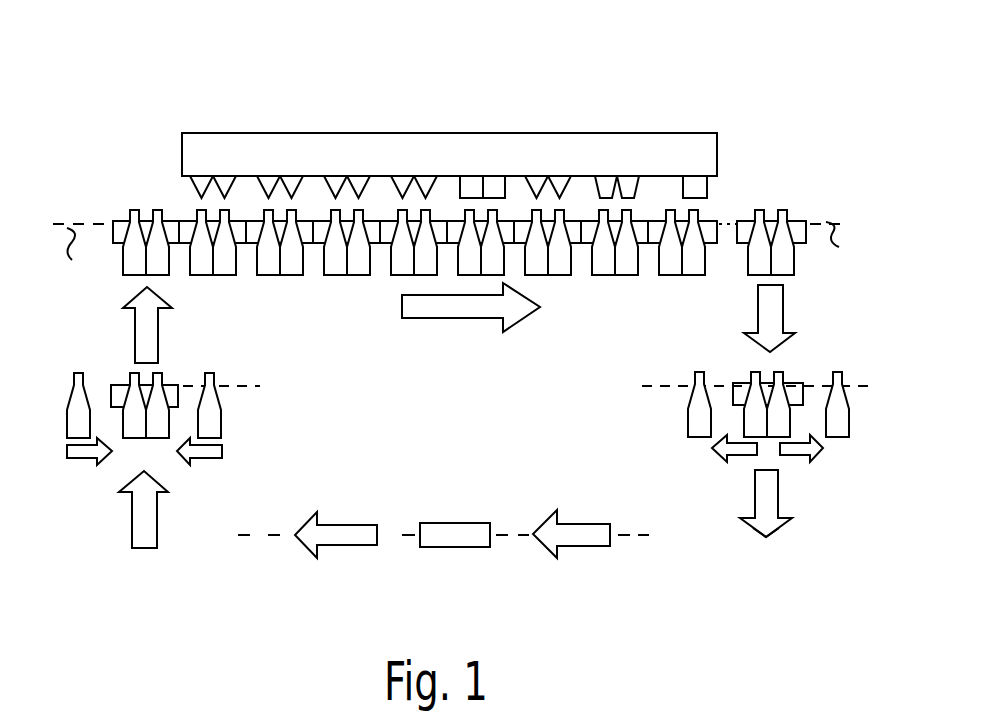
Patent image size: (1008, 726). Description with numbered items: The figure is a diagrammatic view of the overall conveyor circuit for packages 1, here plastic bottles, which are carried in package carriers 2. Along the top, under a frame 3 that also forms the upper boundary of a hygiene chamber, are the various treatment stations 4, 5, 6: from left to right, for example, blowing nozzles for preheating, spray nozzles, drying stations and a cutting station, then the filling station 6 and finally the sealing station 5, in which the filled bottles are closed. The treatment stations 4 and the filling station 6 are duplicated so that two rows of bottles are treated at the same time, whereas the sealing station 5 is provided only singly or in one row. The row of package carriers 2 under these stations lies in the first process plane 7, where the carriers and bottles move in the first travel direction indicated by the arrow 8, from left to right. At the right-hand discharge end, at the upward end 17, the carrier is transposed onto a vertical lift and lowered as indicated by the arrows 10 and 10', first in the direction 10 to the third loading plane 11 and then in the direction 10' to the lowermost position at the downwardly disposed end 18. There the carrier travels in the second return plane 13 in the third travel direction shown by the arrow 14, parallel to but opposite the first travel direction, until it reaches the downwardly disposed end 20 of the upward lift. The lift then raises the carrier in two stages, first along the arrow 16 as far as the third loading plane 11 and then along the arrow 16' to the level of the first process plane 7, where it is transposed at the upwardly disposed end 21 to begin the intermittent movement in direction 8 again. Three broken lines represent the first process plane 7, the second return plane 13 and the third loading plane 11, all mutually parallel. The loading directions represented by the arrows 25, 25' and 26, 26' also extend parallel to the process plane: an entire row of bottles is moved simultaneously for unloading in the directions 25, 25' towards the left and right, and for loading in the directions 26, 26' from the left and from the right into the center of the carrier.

The packages 1 is at (332, 265).
The package carriers 2 is at (122, 232).
The frame 3 is at (270, 150).
The treatment stations 4 is at (205, 187).
The sealing station 5 is at (690, 180).
The filling station 6 is at (608, 183).
The first process plane 7 is at (452, 264).
The first travel direction 8 is at (450, 305).
The second travel direction 10 is at (737, 317).
The second travel direction 10' is at (737, 503).
The third loading plane 11 is at (237, 387).
The second return plane 13 is at (387, 535).
The third travel direction 14 is at (342, 535).
The fourth travel direction 16 is at (166, 509).
The fourth travel direction 16' is at (117, 325).
The upward end 17 is at (810, 208).
The downwardly disposed end 18 is at (757, 535).
The downwardly disposed end 20 is at (122, 552).
The upwardly disposed end 21 is at (128, 218).
The unloading direction 25 is at (734, 463).
The unloading direction 25' is at (822, 465).
The loading direction 26 is at (79, 472).
The loading direction 26' is at (219, 464).